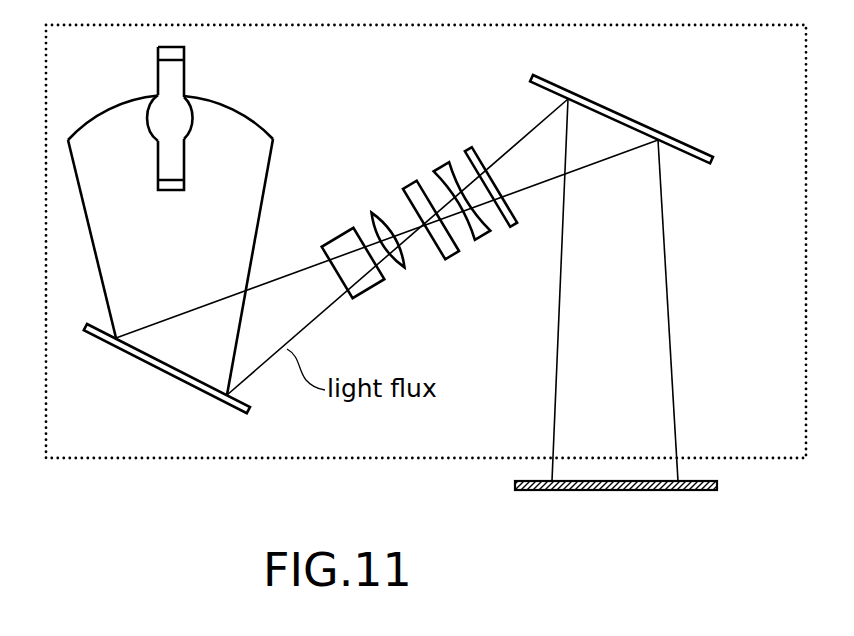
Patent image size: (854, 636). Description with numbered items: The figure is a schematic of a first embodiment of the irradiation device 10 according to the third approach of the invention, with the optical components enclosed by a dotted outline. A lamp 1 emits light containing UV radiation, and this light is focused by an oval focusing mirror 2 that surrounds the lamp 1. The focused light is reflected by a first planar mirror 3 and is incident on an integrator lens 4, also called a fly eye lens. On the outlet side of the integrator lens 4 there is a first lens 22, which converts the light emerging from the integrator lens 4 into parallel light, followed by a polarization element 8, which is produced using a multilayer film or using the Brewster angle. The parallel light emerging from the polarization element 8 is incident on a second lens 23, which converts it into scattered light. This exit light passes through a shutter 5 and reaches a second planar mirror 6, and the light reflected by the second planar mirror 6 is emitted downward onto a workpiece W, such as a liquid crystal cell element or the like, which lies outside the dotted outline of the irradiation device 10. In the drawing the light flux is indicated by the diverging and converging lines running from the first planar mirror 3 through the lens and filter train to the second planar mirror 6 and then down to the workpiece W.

The lamp 1 is at (185, 70).
The oval focusing mirror 2 is at (272, 132).
The first planar mirror 3 is at (152, 364).
The integrator lens 4 is at (337, 228).
The first lens 22 is at (384, 213).
The polarization element 8 is at (452, 253).
The second lens 23 is at (443, 167).
The shutter 5 is at (513, 226).
The second planar mirror 6 is at (645, 120).
The irradiation device 10 is at (88, 460).
The workpiece W is at (707, 481).